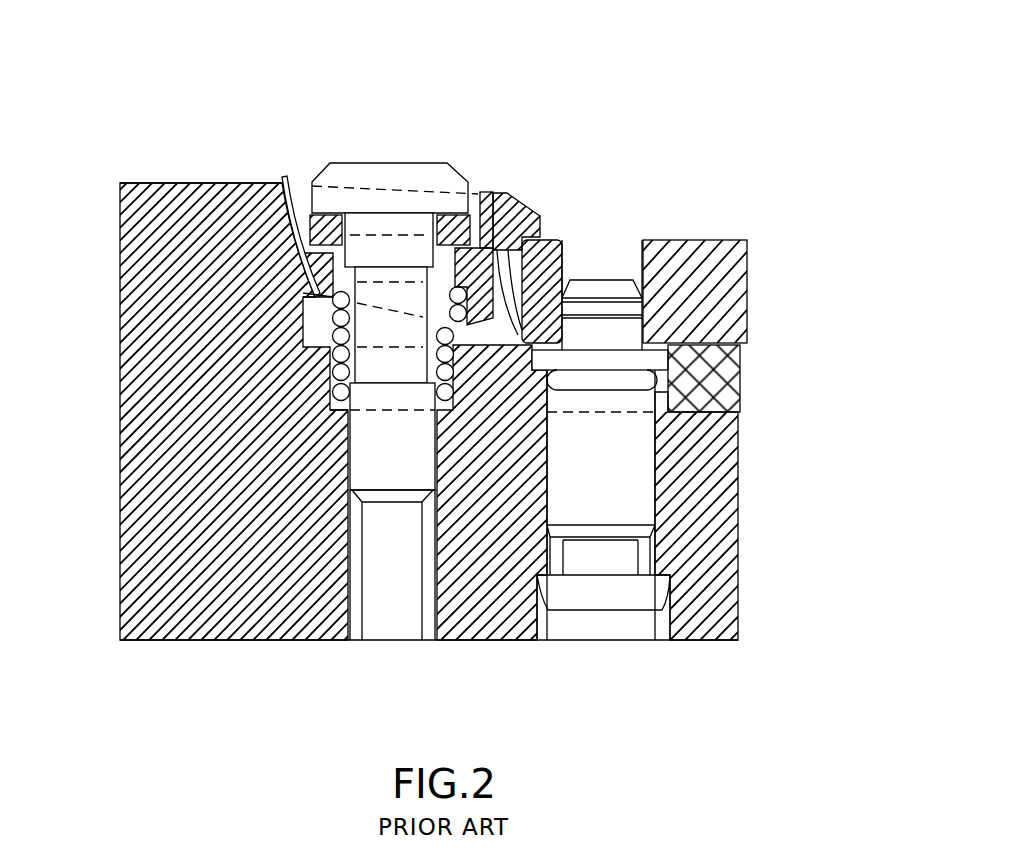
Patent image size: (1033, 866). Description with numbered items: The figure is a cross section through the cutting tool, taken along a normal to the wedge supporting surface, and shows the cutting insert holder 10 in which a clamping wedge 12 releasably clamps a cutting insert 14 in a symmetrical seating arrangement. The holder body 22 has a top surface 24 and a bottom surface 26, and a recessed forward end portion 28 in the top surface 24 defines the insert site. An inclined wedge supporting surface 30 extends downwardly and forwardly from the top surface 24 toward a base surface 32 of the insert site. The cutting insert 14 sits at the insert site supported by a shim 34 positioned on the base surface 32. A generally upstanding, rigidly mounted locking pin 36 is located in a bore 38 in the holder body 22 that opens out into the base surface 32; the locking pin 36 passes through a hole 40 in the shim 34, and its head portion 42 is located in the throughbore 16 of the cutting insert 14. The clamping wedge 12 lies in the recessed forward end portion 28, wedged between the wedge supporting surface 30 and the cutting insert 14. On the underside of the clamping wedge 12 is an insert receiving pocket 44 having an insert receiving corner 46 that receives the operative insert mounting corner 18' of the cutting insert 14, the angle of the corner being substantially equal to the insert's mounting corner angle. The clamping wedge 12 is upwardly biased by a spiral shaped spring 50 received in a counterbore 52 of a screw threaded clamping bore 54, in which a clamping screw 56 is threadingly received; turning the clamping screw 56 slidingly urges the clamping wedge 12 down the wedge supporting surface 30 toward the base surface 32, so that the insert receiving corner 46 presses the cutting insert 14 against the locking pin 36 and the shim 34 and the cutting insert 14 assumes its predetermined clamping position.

The cutting insert holder 10 is at (695, 58).
The clamping wedge 12 is at (301, 193).
The cutting insert 14 is at (750, 290).
The throughbore 16 is at (640, 253).
The operative insert mounting corner 18' is at (488, 218).
The holder body 22 is at (135, 392).
The top surface 24 is at (172, 183).
The bottom surface 26 is at (235, 640).
The recessed forward end portion 28 is at (487, 80).
The wedge supporting surface 30 is at (281, 178).
The base surface 32 is at (735, 400).
The shim 34 is at (722, 368).
The locking pin 36 is at (578, 598).
The bore 38 is at (667, 625).
The hole 40 is at (676, 346).
The head portion 42 is at (603, 285).
The insert receiving pocket 44 is at (500, 235).
The insert receiving corner 46 is at (550, 225).
The spiral shaped spring 50 is at (333, 337).
The counterbore 52 is at (333, 398).
The clamping bore 54 is at (348, 472).
The clamping screw 56 is at (349, 180).